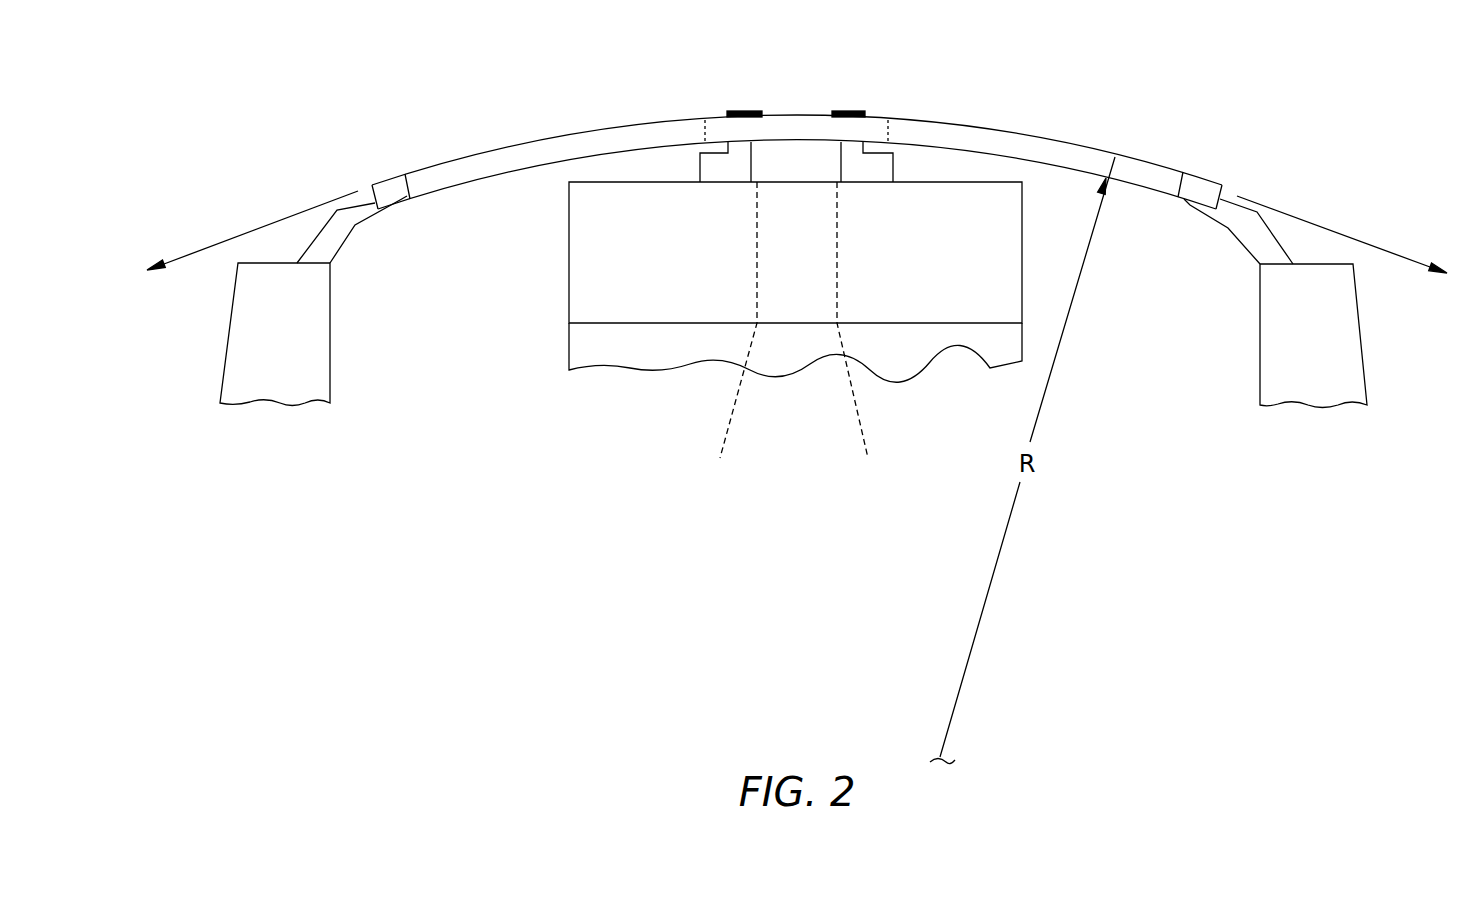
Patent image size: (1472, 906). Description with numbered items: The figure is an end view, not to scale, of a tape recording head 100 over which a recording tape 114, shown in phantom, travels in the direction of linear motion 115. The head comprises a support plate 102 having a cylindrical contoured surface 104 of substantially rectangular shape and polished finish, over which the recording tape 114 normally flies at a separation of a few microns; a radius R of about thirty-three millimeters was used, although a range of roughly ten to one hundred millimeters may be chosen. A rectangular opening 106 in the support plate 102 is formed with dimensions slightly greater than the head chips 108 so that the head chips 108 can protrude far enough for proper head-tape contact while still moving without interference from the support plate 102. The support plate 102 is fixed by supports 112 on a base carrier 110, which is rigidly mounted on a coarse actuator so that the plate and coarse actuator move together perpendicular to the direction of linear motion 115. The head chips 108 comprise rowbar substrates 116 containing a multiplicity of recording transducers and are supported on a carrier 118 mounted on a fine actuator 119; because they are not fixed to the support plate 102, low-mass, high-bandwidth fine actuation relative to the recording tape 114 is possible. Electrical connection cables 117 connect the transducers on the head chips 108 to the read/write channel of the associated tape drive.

The tape recording head 100 is at (1156, 544).
The support plate 102 is at (497, 162).
The cylindrical contoured surface 104 is at (655, 122).
The rectangular opening 106 is at (893, 132).
The head chips 108 is at (843, 111).
The base carrier 110 is at (227, 362).
The supports 112 is at (350, 243).
The recording tape 114 is at (1343, 229).
The linear motion 115 is at (155, 270).
The rowbar substrates 116 is at (715, 160).
The electrical connection cables 117 is at (725, 445).
The carrier 118 is at (567, 296).
The fine actuator 119 is at (628, 375).